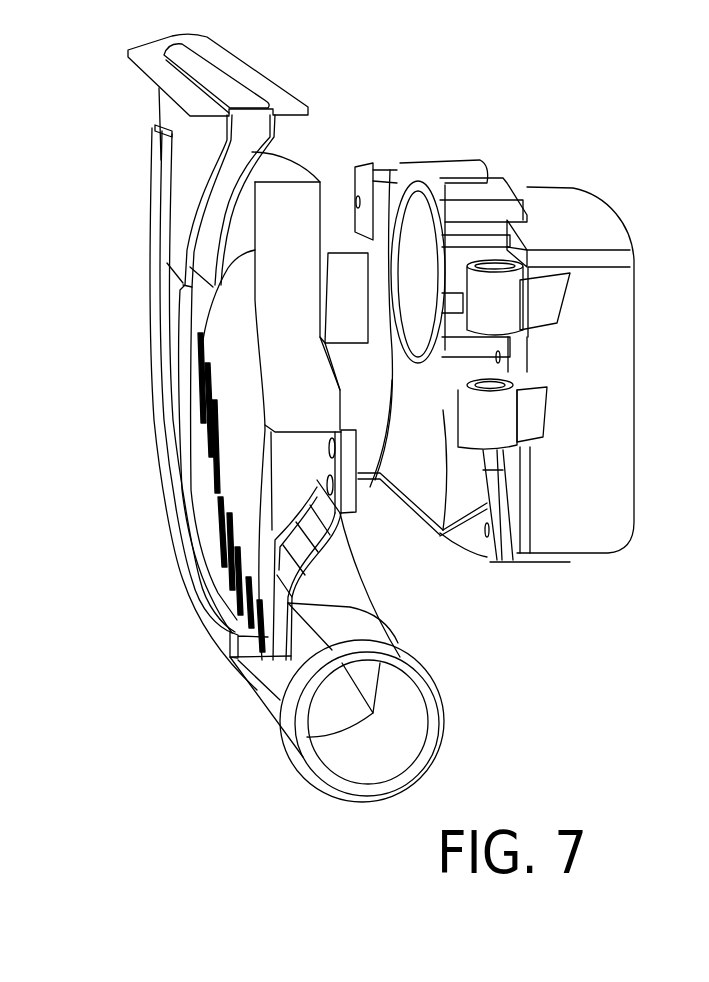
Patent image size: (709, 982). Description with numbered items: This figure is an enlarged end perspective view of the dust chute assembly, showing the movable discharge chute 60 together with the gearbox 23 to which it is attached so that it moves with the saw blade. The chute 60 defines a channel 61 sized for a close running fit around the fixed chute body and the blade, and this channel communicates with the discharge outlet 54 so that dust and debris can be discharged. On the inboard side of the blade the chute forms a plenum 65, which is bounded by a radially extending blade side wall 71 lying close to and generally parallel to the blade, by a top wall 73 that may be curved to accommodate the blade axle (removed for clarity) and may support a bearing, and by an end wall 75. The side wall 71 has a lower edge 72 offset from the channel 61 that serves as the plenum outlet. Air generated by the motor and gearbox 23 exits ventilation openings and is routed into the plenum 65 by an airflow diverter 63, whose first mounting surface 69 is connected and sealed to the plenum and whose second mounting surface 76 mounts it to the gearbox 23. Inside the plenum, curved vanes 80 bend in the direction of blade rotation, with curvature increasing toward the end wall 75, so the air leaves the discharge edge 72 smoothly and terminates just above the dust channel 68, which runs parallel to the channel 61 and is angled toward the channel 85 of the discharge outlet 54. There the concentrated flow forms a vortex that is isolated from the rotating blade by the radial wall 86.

The gearbox 23 is at (612, 325).
The discharge outlet 54 is at (373, 740).
The movable discharge chute 60 is at (193, 577).
The channel 61 is at (230, 658).
The airflow diverter 63 is at (430, 500).
The plenum 65 is at (287, 217).
The dust channel 68 is at (253, 663).
The first mounting surface 69 is at (330, 237).
The blade side wall 71 is at (227, 328).
The lower edge 72 is at (210, 387).
The top wall 73 is at (298, 421).
The end wall 75 is at (335, 545).
The second mounting surface 76 is at (483, 553).
The curved vanes 80 is at (217, 530).
The channel 85 is at (322, 720).
The radial wall 86 is at (257, 662).